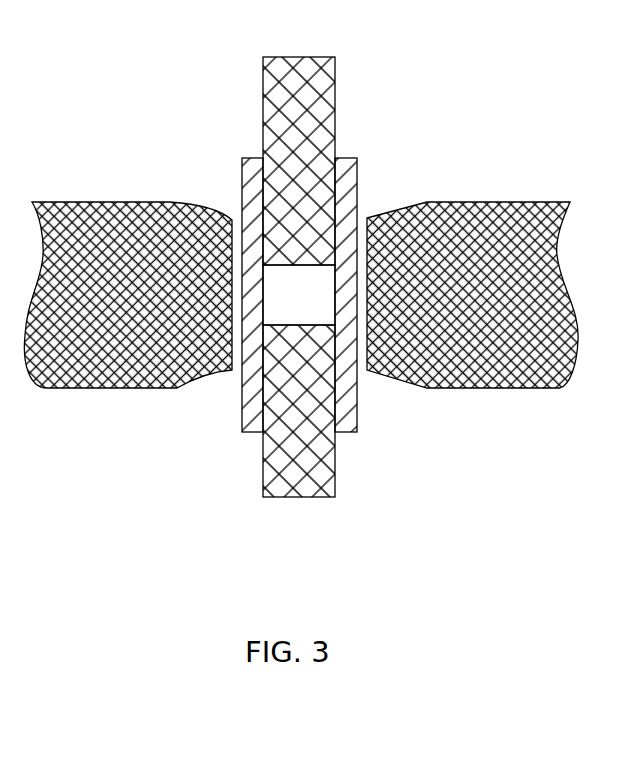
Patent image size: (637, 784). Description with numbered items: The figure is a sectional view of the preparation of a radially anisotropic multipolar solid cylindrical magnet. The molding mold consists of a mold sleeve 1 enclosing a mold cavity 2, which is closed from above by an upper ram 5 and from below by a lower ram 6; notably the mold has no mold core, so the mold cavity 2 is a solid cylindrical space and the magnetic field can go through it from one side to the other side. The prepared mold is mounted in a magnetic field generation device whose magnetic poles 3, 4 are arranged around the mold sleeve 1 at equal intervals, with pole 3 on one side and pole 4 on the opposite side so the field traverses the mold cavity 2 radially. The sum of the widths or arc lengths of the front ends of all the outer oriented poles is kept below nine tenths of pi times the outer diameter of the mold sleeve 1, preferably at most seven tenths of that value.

The mold sleeve 1 is at (260, 157).
The mold cavity 2 is at (325, 297).
The magnetic pole 3 is at (463, 202).
The magnetic pole 4 is at (118, 202).
The upper ram 5 is at (300, 57).
The lower ram 6 is at (302, 497).